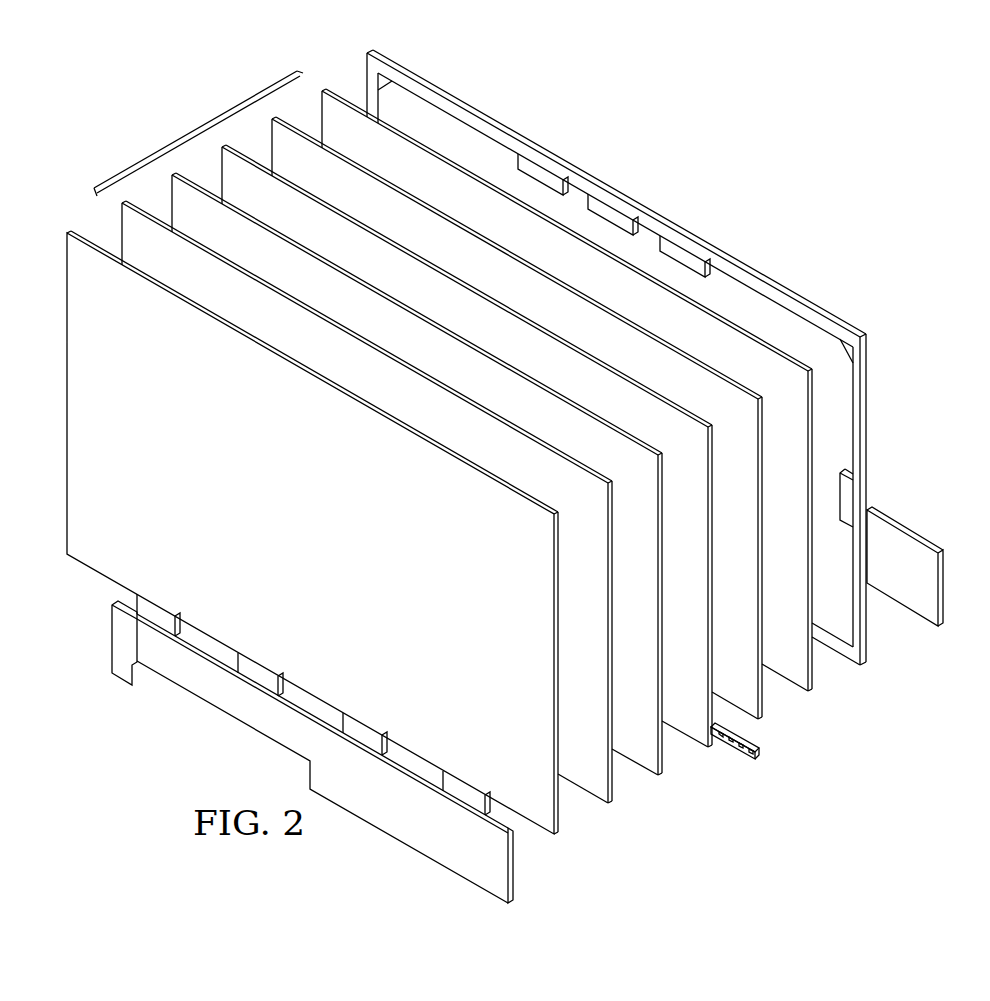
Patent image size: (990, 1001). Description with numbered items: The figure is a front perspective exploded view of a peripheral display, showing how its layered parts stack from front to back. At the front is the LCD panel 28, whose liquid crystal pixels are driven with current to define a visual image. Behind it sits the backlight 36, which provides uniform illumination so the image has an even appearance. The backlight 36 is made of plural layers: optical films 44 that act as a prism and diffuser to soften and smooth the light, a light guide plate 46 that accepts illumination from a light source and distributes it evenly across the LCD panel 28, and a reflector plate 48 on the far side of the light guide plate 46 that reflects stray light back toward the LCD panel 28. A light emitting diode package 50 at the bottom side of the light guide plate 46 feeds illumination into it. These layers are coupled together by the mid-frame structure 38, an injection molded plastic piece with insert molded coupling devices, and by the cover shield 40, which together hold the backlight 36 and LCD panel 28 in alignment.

The LCD panel 28 is at (540, 822).
The backlight 36 is at (192, 133).
The mid-frame structure 38 is at (727, 282).
The cover shield 40 is at (908, 556).
The optical films 44 is at (525, 462).
The light guide plate 46 is at (548, 290).
The reflector plate 48 is at (455, 182).
The light emitting diode package 50 is at (738, 748).